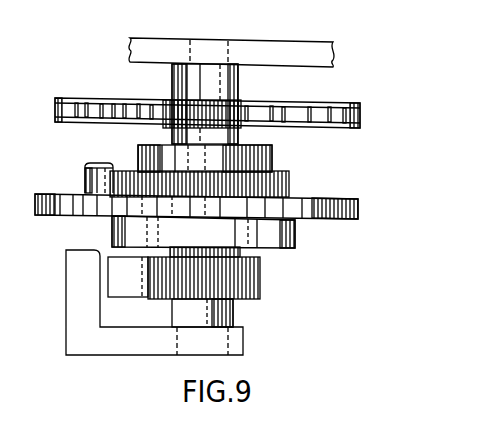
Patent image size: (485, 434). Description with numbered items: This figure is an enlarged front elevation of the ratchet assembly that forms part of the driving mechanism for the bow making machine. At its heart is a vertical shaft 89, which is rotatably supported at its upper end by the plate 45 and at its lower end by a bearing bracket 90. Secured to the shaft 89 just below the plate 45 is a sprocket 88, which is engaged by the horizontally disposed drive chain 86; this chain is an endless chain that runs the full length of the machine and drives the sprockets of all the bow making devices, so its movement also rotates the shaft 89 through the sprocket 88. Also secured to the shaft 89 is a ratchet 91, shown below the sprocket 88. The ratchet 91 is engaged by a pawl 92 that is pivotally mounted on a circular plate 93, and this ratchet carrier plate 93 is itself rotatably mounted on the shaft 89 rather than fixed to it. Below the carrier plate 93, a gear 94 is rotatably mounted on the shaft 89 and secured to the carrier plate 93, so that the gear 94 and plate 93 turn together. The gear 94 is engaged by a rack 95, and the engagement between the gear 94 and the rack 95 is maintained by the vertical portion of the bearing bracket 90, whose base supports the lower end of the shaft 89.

The plate 45 is at (308, 50).
The vertical shaft 89 is at (172, 81).
The sprocket 88 is at (250, 103).
The drive chain 86 is at (337, 105).
The pawl 92 is at (85, 176).
The ratchet 91 is at (289, 190).
The circular plate 93 is at (358, 207).
The rack 95 is at (123, 277).
The gear 94 is at (258, 298).
The bearing bracket 90 is at (88, 343).